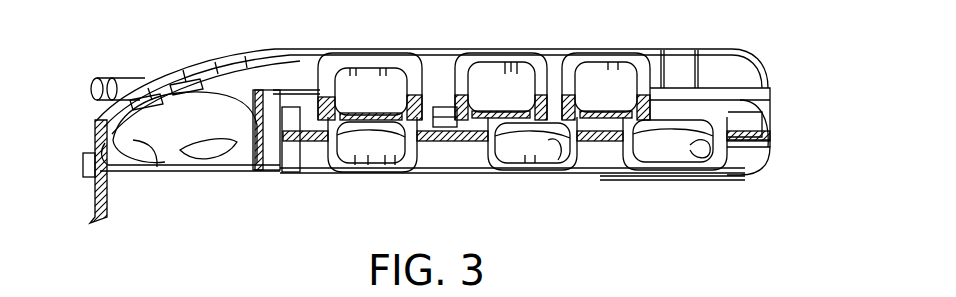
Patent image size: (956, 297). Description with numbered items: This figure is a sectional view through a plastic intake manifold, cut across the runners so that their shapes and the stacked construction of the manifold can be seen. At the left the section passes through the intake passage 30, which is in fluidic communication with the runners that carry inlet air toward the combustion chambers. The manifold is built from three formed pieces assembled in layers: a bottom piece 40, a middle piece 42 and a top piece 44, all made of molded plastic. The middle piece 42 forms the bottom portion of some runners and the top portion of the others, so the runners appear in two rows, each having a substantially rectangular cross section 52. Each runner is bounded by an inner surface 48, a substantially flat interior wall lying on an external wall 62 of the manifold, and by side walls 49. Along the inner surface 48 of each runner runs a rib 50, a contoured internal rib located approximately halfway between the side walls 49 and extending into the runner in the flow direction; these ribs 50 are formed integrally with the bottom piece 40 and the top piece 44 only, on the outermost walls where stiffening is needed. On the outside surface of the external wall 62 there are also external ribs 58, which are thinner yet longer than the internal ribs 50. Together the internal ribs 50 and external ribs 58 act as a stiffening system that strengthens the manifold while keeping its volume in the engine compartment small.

The intake passage 30 is at (157, 152).
The bottom piece 40 is at (753, 168).
The middle piece 42 is at (770, 120).
The top piece 44 is at (760, 62).
The inner surface 48 is at (517, 72).
The side walls 49 is at (362, 157).
The rib 50 is at (613, 67).
The rectangular cross section 52 is at (703, 150).
The external rib 58 is at (210, 55).
The external wall 62 is at (683, 50).